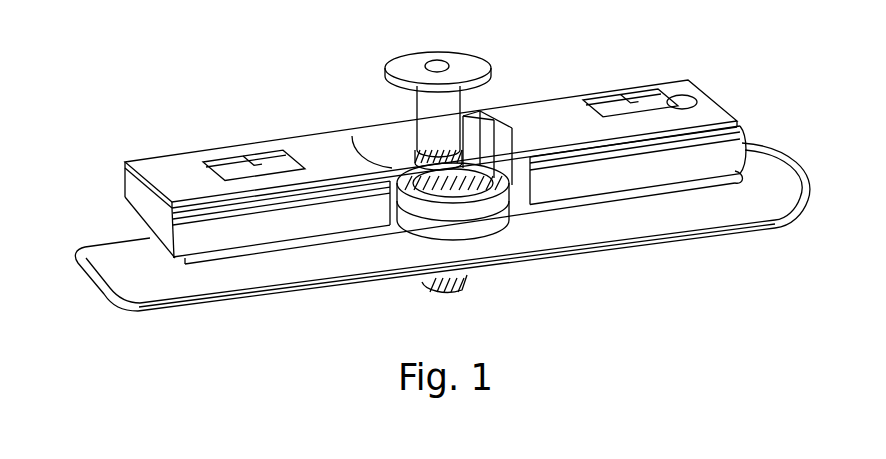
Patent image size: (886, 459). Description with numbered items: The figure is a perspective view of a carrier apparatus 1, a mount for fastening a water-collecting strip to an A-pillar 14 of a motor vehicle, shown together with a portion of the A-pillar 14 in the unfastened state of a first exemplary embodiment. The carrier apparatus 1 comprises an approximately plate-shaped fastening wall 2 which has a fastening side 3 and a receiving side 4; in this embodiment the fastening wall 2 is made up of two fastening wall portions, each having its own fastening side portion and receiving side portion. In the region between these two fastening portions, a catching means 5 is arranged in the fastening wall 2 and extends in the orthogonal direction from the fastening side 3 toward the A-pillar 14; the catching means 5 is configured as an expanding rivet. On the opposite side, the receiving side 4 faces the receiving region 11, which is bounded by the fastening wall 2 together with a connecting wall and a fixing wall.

The carrier apparatus 1 is at (530, 113).
The fastening wall 2 is at (148, 238).
The fastening side 3 is at (195, 268).
The receiving side 4 is at (180, 232).
The catching means 5 is at (413, 70).
The receiving region 11 is at (318, 207).
The A-pillar 14 is at (232, 282).